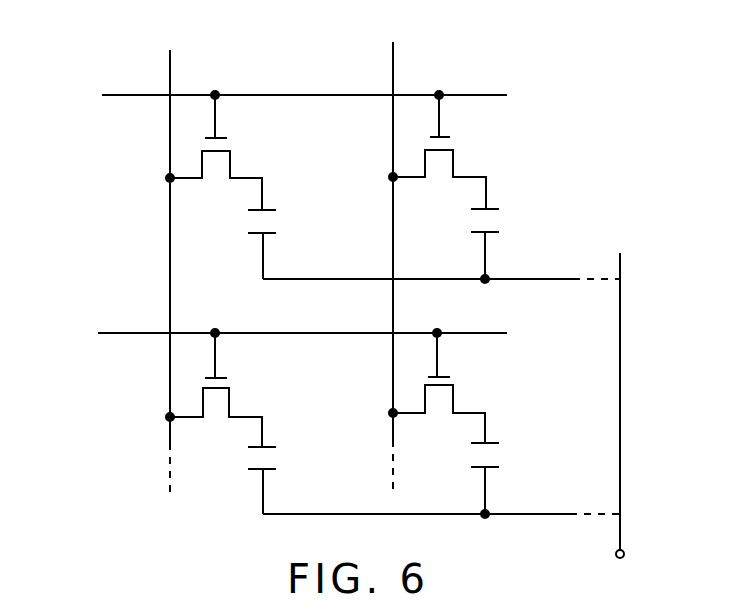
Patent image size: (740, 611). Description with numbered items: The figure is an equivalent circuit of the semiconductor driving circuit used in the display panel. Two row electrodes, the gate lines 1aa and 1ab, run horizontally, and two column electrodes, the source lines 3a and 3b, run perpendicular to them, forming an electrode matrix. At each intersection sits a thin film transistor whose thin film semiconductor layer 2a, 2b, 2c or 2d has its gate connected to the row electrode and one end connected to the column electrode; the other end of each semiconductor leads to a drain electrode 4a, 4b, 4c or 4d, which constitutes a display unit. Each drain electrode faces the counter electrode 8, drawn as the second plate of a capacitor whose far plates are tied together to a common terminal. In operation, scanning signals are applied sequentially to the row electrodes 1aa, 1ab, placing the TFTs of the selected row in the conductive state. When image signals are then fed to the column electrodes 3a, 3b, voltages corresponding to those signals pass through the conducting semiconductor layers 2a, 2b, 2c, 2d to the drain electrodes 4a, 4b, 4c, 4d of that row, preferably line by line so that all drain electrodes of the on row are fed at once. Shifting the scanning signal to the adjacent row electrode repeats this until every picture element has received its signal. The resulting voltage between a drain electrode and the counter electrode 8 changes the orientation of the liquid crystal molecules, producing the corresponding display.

The gate line 1aa is at (293, 119).
The gate line 1ab is at (293, 360).
The source line 3a is at (192, 262).
The source line 3b is at (415, 260).
The thin film semiconductor layer 2a is at (222, 150).
The thin film semiconductor layer 2b is at (226, 388).
The thin film semiconductor layer 2c is at (443, 150).
The thin film semiconductor layer 2d is at (452, 386).
The drain electrode 4a is at (289, 203).
The drain electrode 4b is at (289, 441).
The drain electrode 4c is at (511, 203).
The drain electrode 4d is at (512, 439).
The counter electrode 8 is at (436, 390).